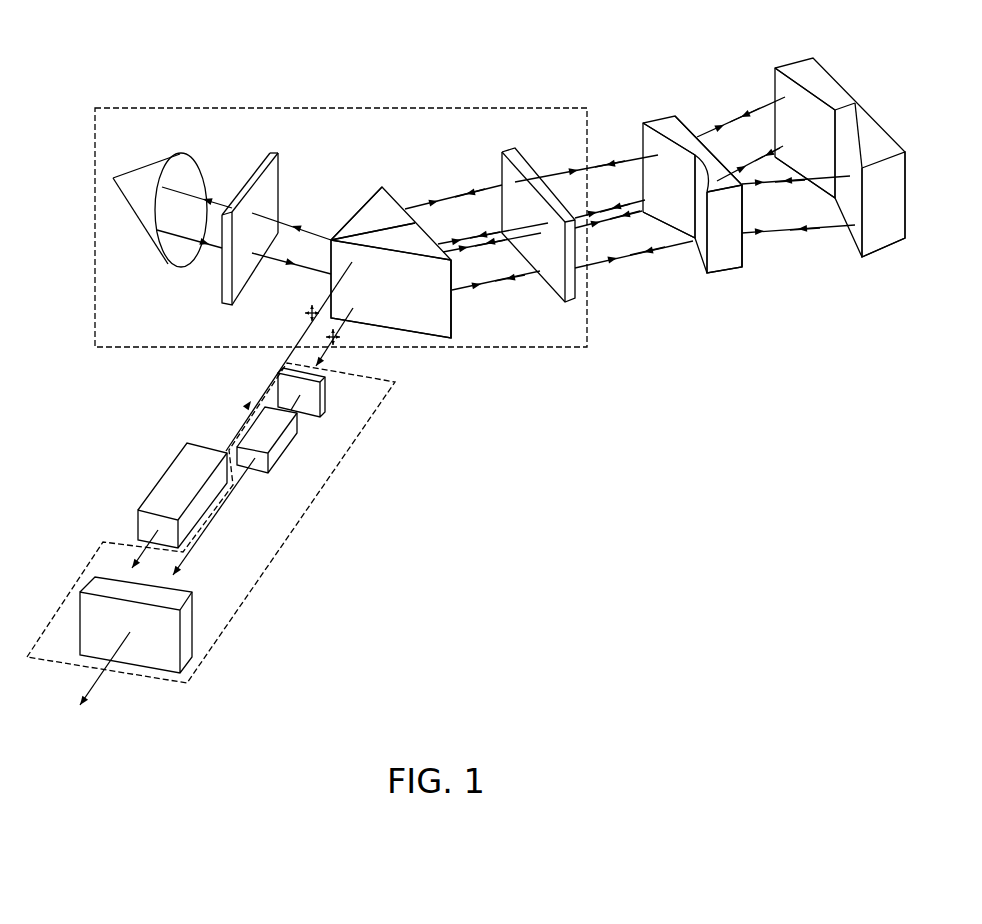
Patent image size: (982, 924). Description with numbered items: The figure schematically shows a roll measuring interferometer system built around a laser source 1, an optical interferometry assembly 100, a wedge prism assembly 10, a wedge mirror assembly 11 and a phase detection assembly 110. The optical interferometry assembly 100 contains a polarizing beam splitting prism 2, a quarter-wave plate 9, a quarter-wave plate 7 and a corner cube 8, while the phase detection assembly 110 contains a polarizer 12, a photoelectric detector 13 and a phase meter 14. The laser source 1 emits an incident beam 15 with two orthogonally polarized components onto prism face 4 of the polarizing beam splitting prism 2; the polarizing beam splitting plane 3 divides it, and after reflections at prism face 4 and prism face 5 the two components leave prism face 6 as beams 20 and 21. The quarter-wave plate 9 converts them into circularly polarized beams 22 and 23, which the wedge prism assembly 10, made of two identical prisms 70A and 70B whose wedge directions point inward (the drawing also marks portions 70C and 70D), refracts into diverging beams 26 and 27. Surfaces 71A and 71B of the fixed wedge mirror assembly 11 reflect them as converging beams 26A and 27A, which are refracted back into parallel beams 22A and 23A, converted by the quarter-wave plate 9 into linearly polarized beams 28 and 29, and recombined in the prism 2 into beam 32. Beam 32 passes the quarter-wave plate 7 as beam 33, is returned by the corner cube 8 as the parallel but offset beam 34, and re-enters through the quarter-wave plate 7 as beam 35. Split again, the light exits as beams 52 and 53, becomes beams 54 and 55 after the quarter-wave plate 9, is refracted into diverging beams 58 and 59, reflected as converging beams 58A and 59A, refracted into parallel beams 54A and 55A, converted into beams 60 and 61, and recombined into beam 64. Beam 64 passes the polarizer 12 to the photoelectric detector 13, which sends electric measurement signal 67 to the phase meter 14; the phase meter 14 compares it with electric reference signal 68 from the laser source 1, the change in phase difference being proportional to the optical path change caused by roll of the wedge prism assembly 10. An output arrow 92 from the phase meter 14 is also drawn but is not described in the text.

The laser source 1 is at (182, 495).
The polarizing beam splitting prism 2 is at (391, 251).
The polarizing beam splitting plane 3 is at (365, 230).
The prism face 4 is at (391, 289).
The prism face 5 is at (360, 205).
The prism face 6 is at (452, 308).
The quarter-wave plate 7 is at (255, 219).
The corner cube 8 is at (160, 206).
The quarter-wave plate 9 is at (536, 216).
The wedge prism assembly 10 is at (690, 183).
The wedge mirror assembly 11 is at (840, 148).
The polarizer 12 is at (315, 392).
The photoelectric detector 13 is at (272, 435).
The phase meter 14 is at (150, 625).
The incident beam 15 is at (286, 356).
The beam 20 is at (453, 196).
The beam 21 is at (493, 232).
The circular polarized beam 22 is at (586, 166).
The parallel beam 22A is at (612, 154).
The circular polarized beam 23 is at (606, 206).
The parallel beam 23A is at (617, 200).
The diverging beam 26 is at (741, 117).
The converging beam 26A is at (743, 107).
The diverging beam 27 is at (796, 191).
The converging beam 27A is at (792, 192).
The linear polarized beam 28 is at (470, 185).
The linear polarized beam 29 is at (485, 225).
The recombined beam 32 is at (291, 219).
The beam 33 is at (197, 193).
The beam 34 is at (189, 250).
The beam 35 is at (291, 271).
The beam 52 is at (496, 289).
The beam 53 is at (492, 250).
The beam 54 is at (634, 264).
The parallel beam 54A is at (653, 262).
The beam 55 is at (608, 226).
The parallel beam 55A is at (633, 224).
The diverging beam 58 is at (798, 241).
The converging beam 58A is at (806, 239).
The diverging beam 59 is at (750, 163).
The converging beam 59A is at (760, 147).
The linear polarized beam 60 is at (514, 287).
The linear polarized beam 61 is at (491, 250).
The recombined beam 64 is at (333, 339).
The electric measurement signal 67 is at (212, 520).
The electric reference signal 68 is at (133, 550).
The prism 70A is at (669, 180).
The prism 70B is at (700, 250).
The beam splitter top surface 70C is at (696, 128).
The beam splitter exit face 70D is at (745, 243).
The surface 71A is at (805, 133).
The surface 71B is at (854, 236).
The output signal beam 92 is at (103, 669).
The optical interferometry assembly 100 is at (515, 352).
The phase detection assembly 110 is at (263, 575).